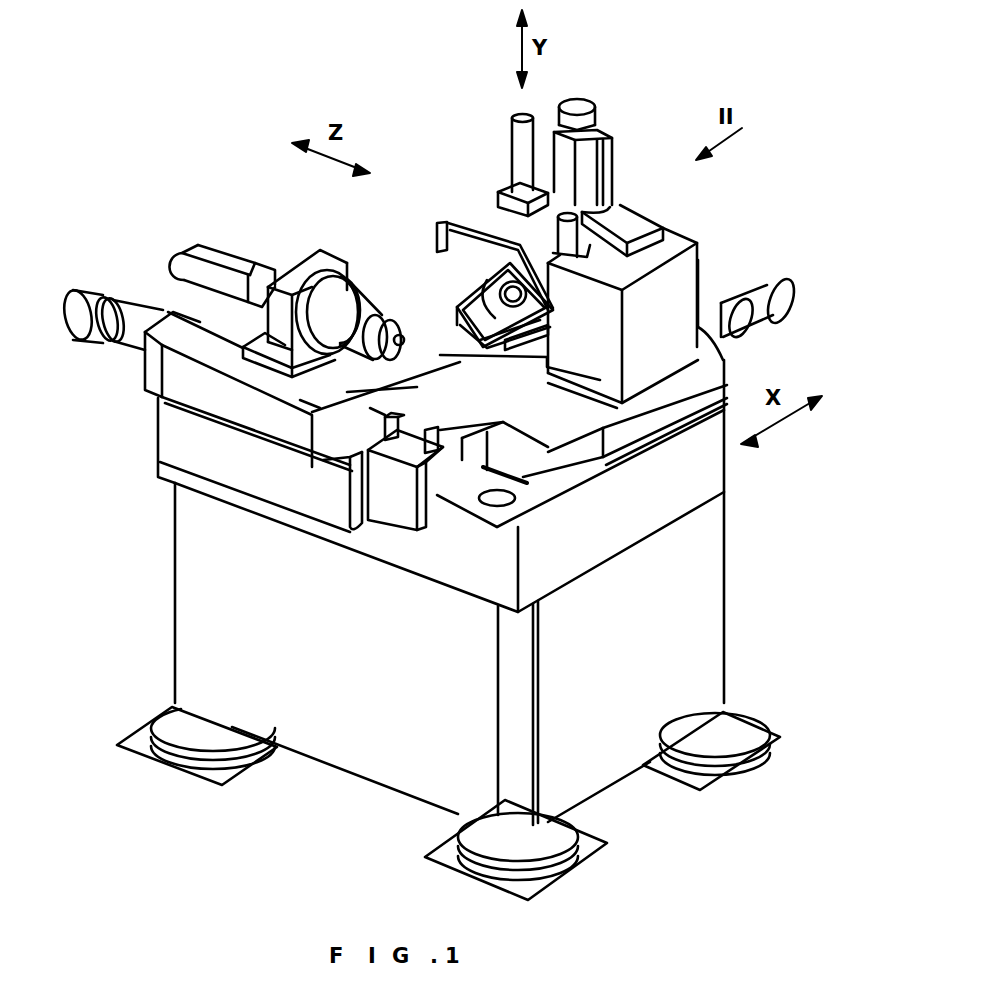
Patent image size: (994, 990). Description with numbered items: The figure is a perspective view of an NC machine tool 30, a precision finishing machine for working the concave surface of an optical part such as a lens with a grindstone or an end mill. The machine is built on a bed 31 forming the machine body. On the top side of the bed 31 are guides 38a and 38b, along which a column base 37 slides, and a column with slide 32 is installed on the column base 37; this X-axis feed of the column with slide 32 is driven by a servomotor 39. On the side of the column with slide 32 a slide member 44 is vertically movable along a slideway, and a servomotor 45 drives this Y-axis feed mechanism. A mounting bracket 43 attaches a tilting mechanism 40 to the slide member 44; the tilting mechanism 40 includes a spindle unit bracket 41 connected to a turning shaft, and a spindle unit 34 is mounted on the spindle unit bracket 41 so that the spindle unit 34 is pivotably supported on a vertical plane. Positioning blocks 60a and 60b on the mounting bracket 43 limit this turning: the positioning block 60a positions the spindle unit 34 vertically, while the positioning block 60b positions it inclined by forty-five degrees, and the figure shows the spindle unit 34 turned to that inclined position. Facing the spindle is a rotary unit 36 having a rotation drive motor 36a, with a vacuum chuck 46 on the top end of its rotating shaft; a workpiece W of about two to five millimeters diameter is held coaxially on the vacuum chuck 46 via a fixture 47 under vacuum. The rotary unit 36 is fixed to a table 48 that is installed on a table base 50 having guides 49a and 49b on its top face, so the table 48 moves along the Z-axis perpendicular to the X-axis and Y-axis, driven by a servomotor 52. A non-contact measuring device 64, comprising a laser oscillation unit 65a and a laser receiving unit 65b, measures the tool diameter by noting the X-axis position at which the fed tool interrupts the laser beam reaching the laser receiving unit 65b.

The NC machine tool 30 is at (365, 137).
The bed 31 is at (712, 590).
The column with slide 32 is at (687, 277).
The spindle unit 34 is at (473, 313).
The rotary unit 36 is at (280, 244).
The rotation drive motor 36a is at (222, 262).
The column base 37 is at (715, 374).
The guide 38a is at (460, 436).
The guide 38b is at (550, 495).
The servomotor 39 is at (727, 300).
The tilting mechanism 40 is at (558, 288).
The spindle unit bracket 41 is at (490, 280).
The mounting bracket 43 is at (453, 243).
The slide member 44 is at (510, 193).
The servomotor 45 is at (613, 162).
The vacuum chuck 46 is at (370, 317).
The fixture 47 is at (393, 323).
The table 48 is at (213, 398).
The guide 49a is at (343, 453).
The guide 49b is at (467, 403).
The table base 50 is at (198, 457).
The servomotor 52 is at (80, 295).
The positioning block 60a is at (443, 222).
The positioning block 60b is at (540, 333).
The non-contact measuring device 64 is at (373, 387).
The laser oscillation unit 65a is at (336, 392).
The laser receiving unit 65b is at (498, 433).
The workpiece W is at (405, 330).